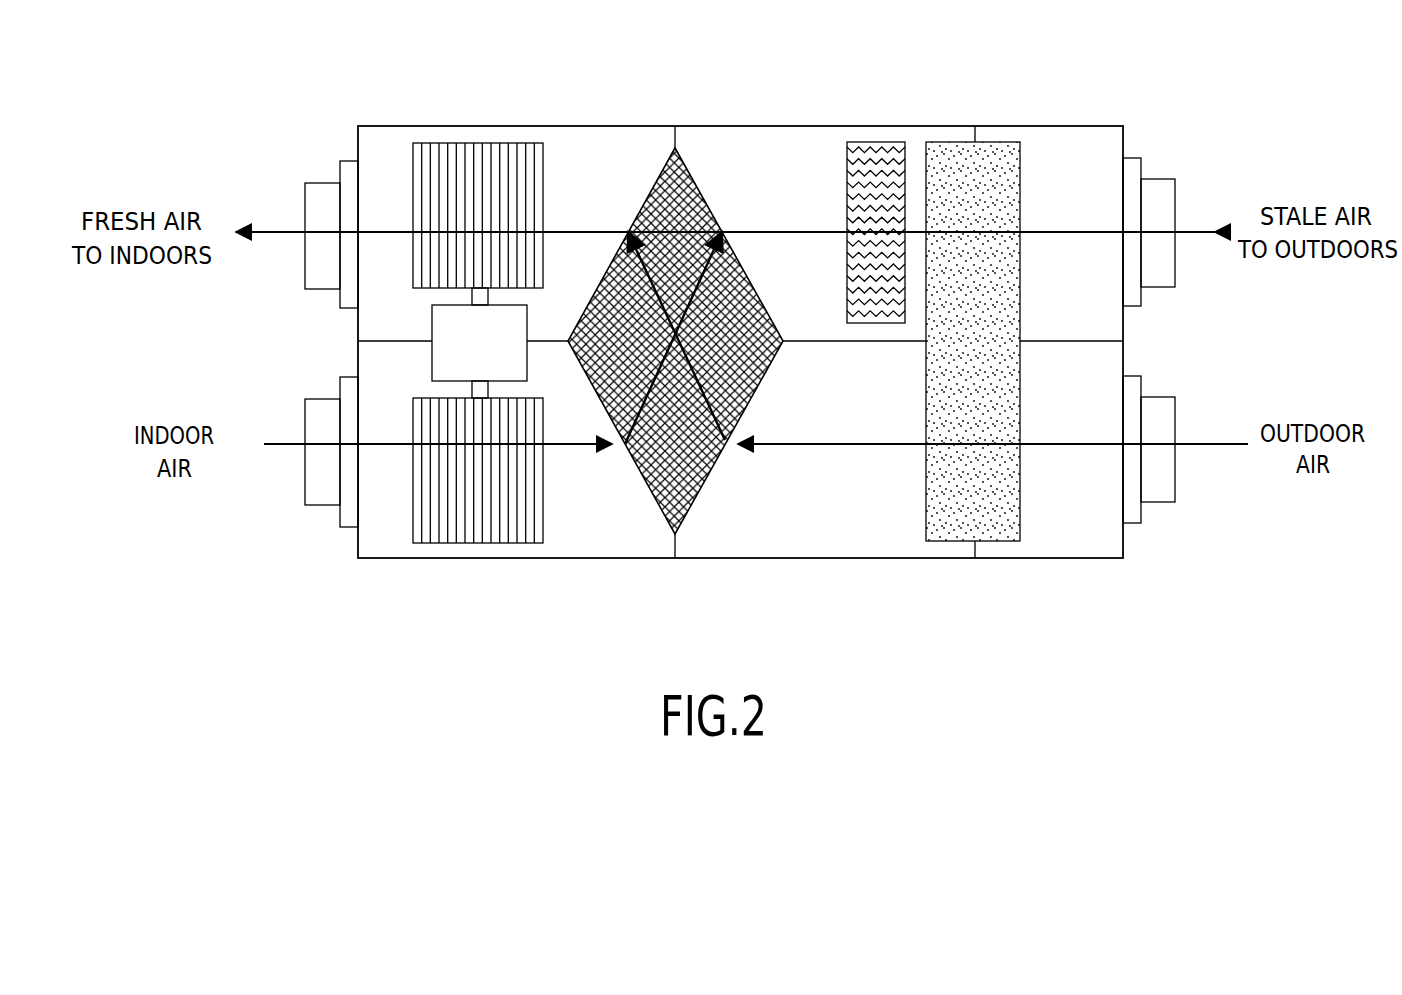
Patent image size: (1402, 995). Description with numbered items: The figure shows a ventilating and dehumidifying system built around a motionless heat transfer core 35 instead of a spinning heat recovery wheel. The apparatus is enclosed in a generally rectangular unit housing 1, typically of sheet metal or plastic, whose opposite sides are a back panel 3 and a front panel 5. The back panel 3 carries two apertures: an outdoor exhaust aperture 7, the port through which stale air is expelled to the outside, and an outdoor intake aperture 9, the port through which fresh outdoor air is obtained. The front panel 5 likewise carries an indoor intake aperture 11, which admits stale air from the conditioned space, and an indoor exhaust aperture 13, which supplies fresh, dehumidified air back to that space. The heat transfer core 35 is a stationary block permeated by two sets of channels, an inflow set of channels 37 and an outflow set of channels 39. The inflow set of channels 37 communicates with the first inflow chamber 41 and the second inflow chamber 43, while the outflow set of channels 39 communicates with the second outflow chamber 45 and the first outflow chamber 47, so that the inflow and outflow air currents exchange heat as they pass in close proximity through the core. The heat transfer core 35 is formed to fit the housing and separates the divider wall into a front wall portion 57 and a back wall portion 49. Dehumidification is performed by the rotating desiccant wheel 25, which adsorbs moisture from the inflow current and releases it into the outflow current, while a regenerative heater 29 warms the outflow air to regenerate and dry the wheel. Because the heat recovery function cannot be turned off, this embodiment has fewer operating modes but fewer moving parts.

The unit housing 1 is at (773, 126).
The back panel 3 is at (1123, 355).
The front panel 5 is at (358, 330).
The outdoor exhaust aperture 7 is at (1123, 199).
The outdoor intake aperture 9 is at (1123, 509).
The indoor intake aperture 11 is at (348, 489).
The indoor exhaust aperture 13 is at (352, 199).
The rotating desiccant wheel 25 is at (1020, 520).
The regenerative heater 29 is at (880, 142).
The heat transfer core 35 is at (700, 188).
The inflow set of channels 37 is at (703, 492).
The outflow set of channels 39 is at (645, 490).
The first inflow chamber 41 is at (803, 530).
The second inflow chamber 43 is at (580, 150).
The second outflow chamber 45 is at (587, 525).
The first outflow chamber 47 is at (1062, 150).
The back wall portion 49 is at (868, 346).
The front wall portion 57 is at (547, 340).